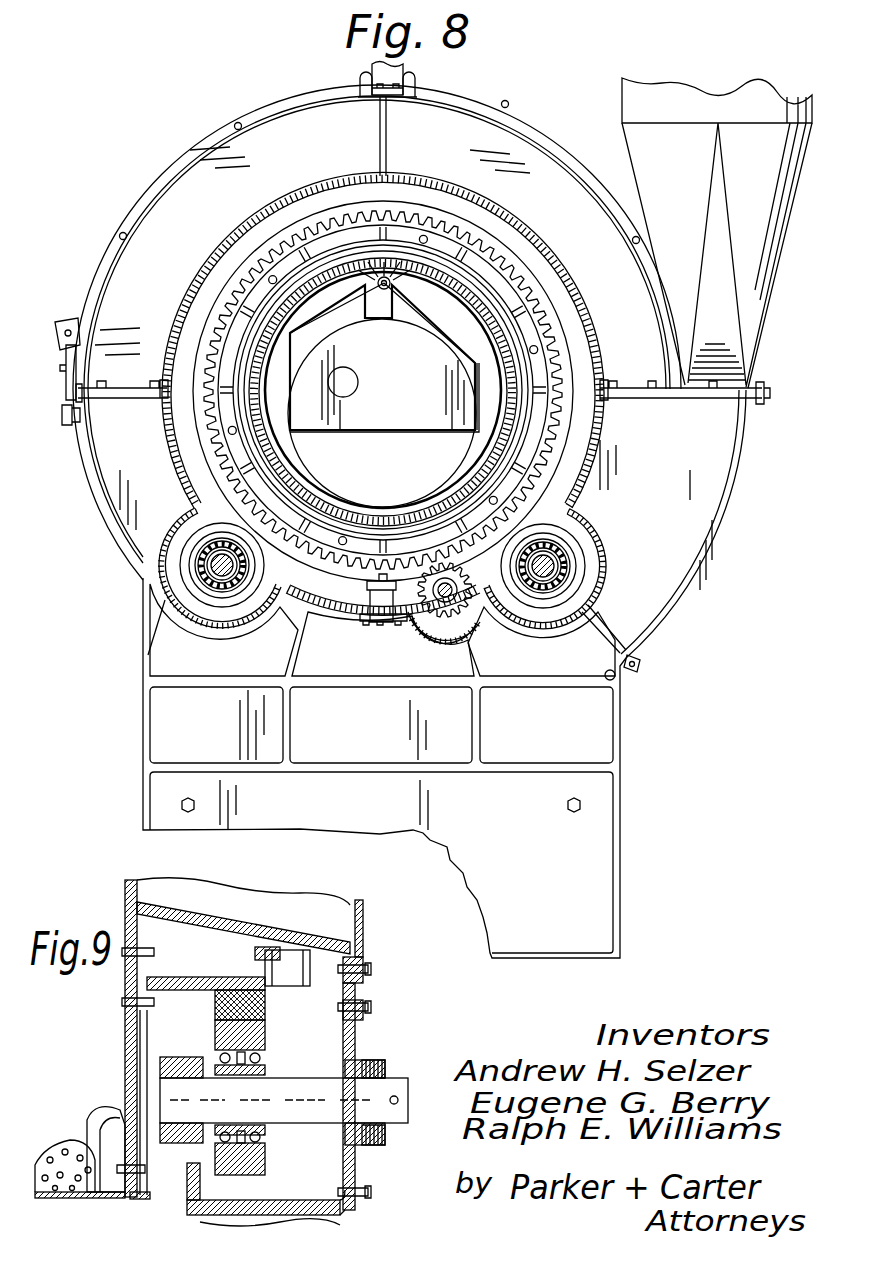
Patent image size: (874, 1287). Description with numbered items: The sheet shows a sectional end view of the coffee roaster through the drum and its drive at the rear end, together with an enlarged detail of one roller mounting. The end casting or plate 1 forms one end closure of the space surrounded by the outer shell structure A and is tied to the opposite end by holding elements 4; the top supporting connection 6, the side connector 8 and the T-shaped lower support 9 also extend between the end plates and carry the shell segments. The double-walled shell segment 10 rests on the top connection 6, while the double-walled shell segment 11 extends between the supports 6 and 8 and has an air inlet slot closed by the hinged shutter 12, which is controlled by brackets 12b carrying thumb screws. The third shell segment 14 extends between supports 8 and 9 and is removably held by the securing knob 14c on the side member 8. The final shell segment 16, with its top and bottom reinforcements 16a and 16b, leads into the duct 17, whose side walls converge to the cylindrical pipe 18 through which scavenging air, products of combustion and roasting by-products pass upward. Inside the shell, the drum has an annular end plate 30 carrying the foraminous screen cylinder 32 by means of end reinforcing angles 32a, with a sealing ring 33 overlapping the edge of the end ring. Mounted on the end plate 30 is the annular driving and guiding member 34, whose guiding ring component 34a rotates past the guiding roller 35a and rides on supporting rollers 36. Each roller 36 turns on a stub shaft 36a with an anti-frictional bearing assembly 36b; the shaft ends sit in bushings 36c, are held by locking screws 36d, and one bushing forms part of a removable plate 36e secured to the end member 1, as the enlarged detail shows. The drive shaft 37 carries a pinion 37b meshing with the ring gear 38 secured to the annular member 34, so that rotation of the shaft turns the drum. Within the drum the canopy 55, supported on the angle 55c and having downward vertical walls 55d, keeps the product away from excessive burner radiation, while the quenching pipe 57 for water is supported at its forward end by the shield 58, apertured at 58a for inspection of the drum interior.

In FIG. 8, the outer shell structure A is at (287, 110).
In FIG. 8, the end casting 1 is at (142, 738).
In FIG. 9, the end casting 1 is at (190, 1210).
In FIG. 8, the tie rods 4 is at (188, 812).
In FIG. 8, the top supporting connection 6 is at (376, 100).
In FIG. 8, the side connector 8 is at (75, 400).
In FIG. 8, the shell segment 10 is at (508, 114).
In FIG. 8, the shell segment 11 is at (178, 168).
In FIG. 8, the shutter 12 is at (66, 356).
In FIG. 8, the brackets 12b is at (68, 320).
In FIG. 8, the third shell segment 14 is at (105, 535).
In FIG. 8, the securing knob 14c is at (62, 413).
In FIG. 8, the final shell segment 16 is at (740, 486).
In FIG. 8, the top reinforcement 16a is at (766, 397).
In FIG. 8, the bottom reinforcement 16b is at (645, 667).
In FIG. 8, the duct 17 is at (776, 287).
In FIG. 8, the cylindrical pipe 18 is at (642, 92).
In FIG. 9, the annular end plate 30 is at (123, 1048).
In FIG. 9, the foraminous screen cylinder 32 is at (45, 1198).
In FIG. 9, the end reinforcing angles 32a is at (87, 1131).
In FIG. 9, the sealing rings 33 is at (140, 1199).
In FIG. 9, the annular driving and guiding member 34 is at (180, 977).
In FIG. 8, the guiding ring component 34a is at (210, 480).
In FIG. 9, the guiding ring component 34a is at (262, 1015).
In FIG. 8, the guiding roller 35a is at (375, 596).
In FIG. 8, the supporting rollers 36 is at (178, 573).
In FIG. 9, the supporting rollers 36 is at (260, 1037).
In FIG. 8, the stub shafts 36a is at (224, 562).
In FIG. 9, the stub shafts 36a is at (308, 1116).
In FIG. 8, the anti-frictional bearing assemblies 36b is at (228, 590).
In FIG. 9, the anti-frictional bearing assemblies 36b is at (264, 1057).
In FIG. 9, the bushings 36c is at (172, 1057).
In FIG. 9, the locking screws 36d is at (369, 1058).
In FIG. 9, the removable plate 36e is at (358, 1025).
In FIG. 8, the drive shaft 37 is at (443, 600).
In FIG. 8, the pinion 37b is at (462, 613).
In FIG. 8, the ring gear 38 is at (548, 453).
In FIG. 9, the ring gear 38 is at (288, 988).
In FIG. 8, the canopy 55 is at (313, 296).
In FIG. 8, the angle 55c is at (365, 319).
In FIG. 8, the downward vertical walls 55d is at (473, 397).
In FIG. 8, the quenching pipe 57 is at (389, 290).
In FIG. 8, the shield 58 is at (380, 417).
In FIG. 8, the apertures 58a is at (350, 397).
In FIG. 8, the lower support 9 is at (464, 455).